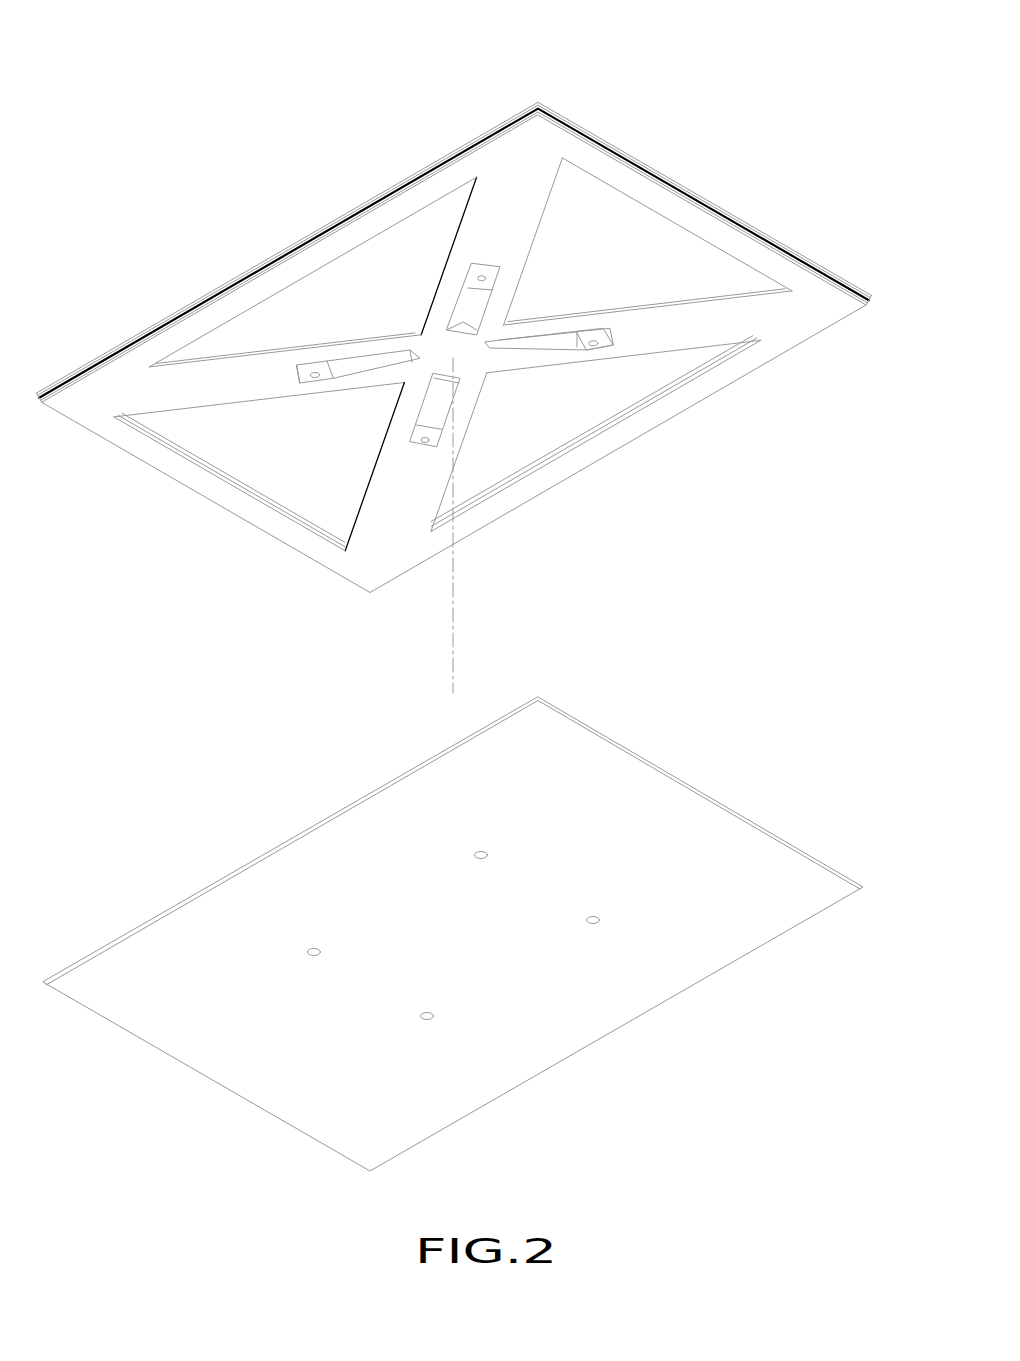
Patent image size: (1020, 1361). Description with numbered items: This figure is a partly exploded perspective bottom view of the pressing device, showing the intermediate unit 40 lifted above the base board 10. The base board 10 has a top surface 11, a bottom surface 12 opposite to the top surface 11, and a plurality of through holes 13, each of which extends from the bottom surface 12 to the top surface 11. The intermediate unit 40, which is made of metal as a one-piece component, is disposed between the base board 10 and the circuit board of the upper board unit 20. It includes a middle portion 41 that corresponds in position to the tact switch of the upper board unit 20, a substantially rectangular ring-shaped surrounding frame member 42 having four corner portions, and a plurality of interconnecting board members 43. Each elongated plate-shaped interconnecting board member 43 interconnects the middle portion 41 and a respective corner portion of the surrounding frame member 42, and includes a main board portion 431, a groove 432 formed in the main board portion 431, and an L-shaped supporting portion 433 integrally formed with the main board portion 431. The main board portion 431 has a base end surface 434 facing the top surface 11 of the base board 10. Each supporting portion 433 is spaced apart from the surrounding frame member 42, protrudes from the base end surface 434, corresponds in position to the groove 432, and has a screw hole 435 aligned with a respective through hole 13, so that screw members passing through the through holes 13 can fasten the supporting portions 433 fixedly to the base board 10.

The base board 10 is at (453, 934).
The top surface 11 is at (757, 823).
The bottom surface 12 is at (642, 995).
The through holes 13 is at (592, 923).
The upper board unit 20 is at (600, 121).
The intermediate unit 40 is at (473, 321).
The middle portion 41 is at (465, 362).
The surrounding frame member 42 is at (733, 373).
The interconnecting board members 43 is at (503, 354).
The main board portion 431 is at (732, 308).
The groove 432 is at (553, 340).
The supporting portion 433 is at (585, 349).
The base end surface 434 is at (678, 342).
The screw hole 435 is at (315, 378).